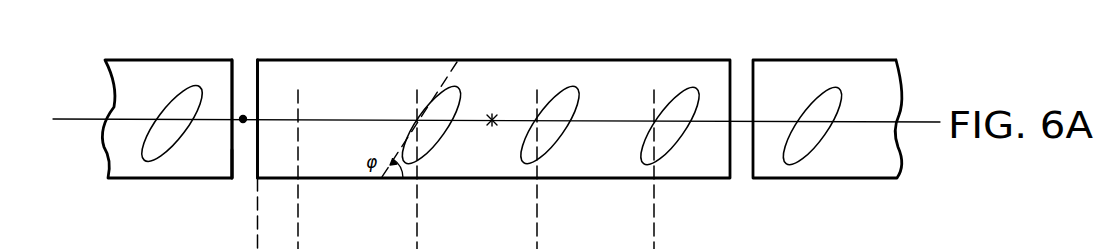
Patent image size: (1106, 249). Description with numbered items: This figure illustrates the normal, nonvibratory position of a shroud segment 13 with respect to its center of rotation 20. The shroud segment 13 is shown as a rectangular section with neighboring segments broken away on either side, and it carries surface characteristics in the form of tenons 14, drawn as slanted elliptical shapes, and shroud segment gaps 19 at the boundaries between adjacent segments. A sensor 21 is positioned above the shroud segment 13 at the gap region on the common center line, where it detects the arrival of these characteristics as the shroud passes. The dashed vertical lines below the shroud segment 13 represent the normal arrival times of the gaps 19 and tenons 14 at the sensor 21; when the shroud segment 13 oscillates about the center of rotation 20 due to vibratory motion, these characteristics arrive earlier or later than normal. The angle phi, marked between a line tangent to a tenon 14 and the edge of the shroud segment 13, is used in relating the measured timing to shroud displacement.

The shroud segment 13 is at (272, 59).
The tenons 14 is at (436, 143).
The shroud segment gaps 19 is at (244, 170).
The center of rotation 20 is at (490, 118).
The sensor 21 is at (244, 116).